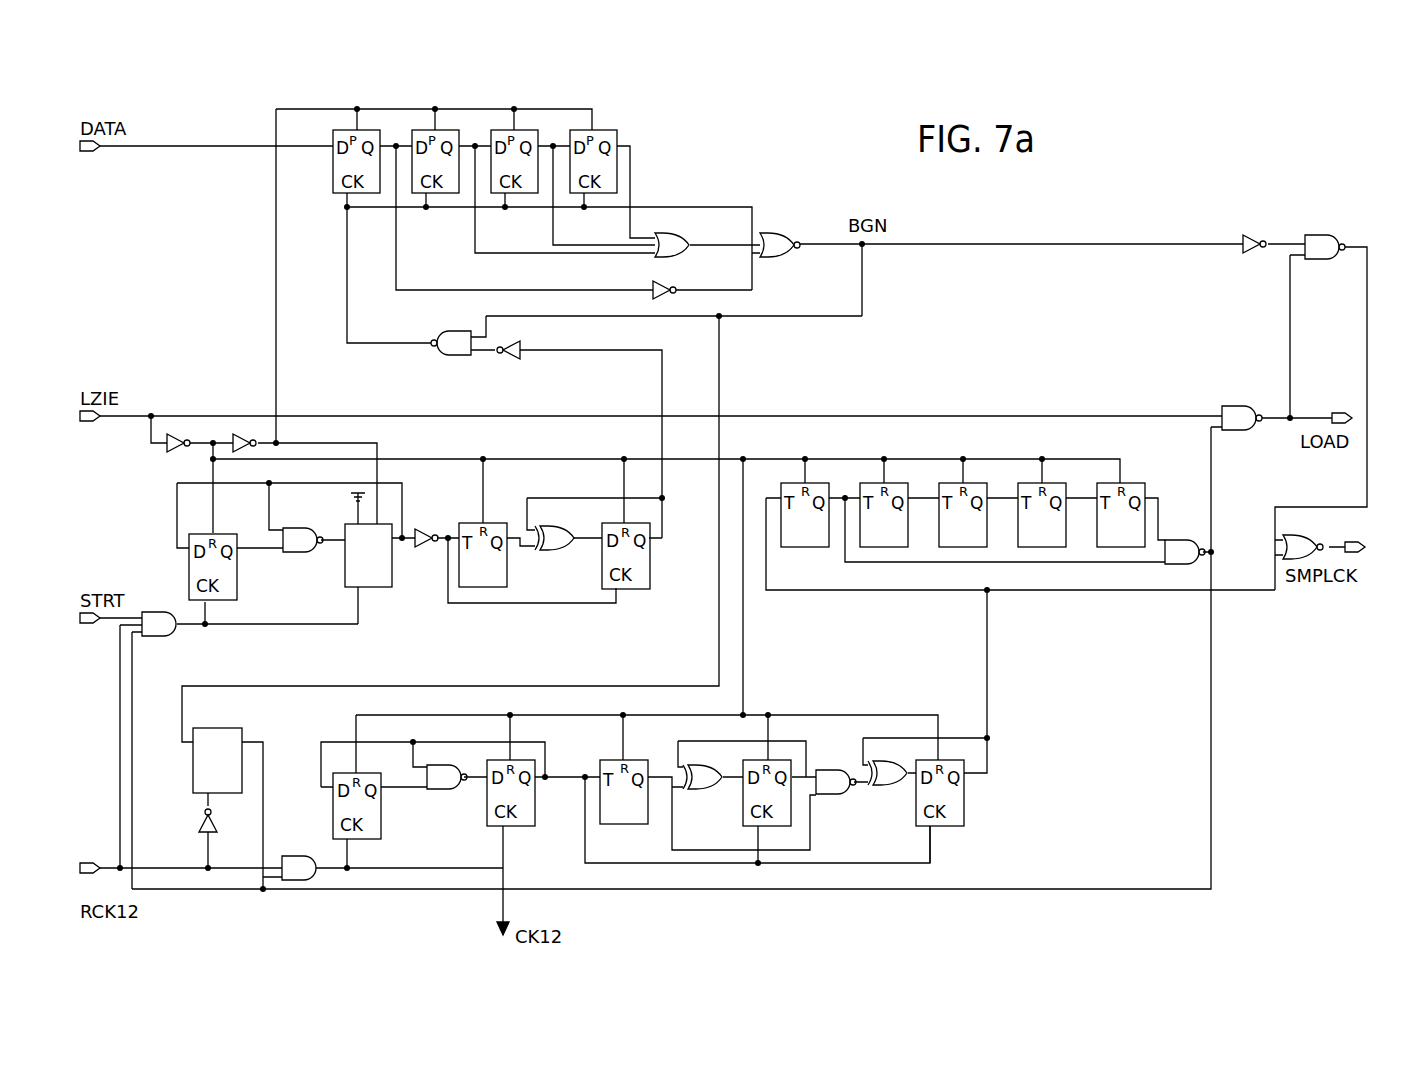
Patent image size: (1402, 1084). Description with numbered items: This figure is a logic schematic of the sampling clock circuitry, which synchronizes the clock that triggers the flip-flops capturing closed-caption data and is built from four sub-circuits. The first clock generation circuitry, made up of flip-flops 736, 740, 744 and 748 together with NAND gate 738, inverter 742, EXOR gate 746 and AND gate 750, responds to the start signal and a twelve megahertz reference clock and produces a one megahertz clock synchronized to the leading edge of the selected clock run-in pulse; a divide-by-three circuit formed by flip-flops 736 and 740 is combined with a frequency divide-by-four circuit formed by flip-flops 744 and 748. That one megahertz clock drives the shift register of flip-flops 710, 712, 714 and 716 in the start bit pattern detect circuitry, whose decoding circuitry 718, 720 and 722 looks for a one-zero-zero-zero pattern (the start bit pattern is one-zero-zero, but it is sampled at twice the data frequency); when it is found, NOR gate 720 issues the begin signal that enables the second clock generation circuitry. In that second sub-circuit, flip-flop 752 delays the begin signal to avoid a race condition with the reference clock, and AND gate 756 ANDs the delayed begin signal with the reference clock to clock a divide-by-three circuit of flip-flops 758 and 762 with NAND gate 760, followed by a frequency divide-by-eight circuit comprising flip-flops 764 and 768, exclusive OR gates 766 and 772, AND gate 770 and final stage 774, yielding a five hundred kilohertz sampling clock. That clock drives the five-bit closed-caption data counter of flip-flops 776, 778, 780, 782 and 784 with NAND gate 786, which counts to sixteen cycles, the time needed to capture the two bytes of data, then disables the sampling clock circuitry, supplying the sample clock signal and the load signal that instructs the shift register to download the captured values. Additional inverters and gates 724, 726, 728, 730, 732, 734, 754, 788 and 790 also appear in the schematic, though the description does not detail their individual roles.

The flip-flop 710 is at (335, 128).
The flip-flop 712 is at (445, 128).
The flip-flop 714 is at (527, 128).
The flip-flop 716 is at (612, 128).
The decoding circuitry 718 is at (672, 233).
The NOR gate 720 is at (772, 233).
The decoding circuitry 722 is at (662, 298).
The NAND gate 724 is at (455, 357).
The inverter 726 is at (510, 360).
The inverter 728 is at (1258, 236).
The NAND gate 730 is at (1312, 236).
The inverter 732 is at (175, 449).
The inverter 734 is at (245, 436).
The flip-flop 736 is at (226, 533).
The NAND gate 738 is at (305, 528).
The flip-flop 740 is at (344, 557).
The inverter 742 is at (425, 533).
The flip-flop 744 is at (497, 523).
The EXOR gate 746 is at (543, 550).
The flip-flop 748 is at (650, 563).
The AND gate 750 is at (178, 636).
The flip-flop 752 is at (222, 728).
The inverter 754 is at (200, 825).
The AND gate 756 is at (295, 855).
The flip-flop 758 is at (382, 838).
The NAND gate 760 is at (437, 790).
The flip-flop 762 is at (520, 828).
The flip-flop 764 is at (610, 827).
The exclusive OR gate 766 is at (705, 790).
The flip-flop 768 is at (748, 758).
The AND gate 770 is at (828, 797).
The exclusive OR gate 772 is at (900, 760).
The frequency divide-by-eight circuit stage 774 is at (965, 800).
The flip-flop 776 is at (790, 483).
The flip-flop 778 is at (870, 483).
The flip-flop 780 is at (950, 483).
The flip-flop 782 is at (1028, 483).
The flip-flop 784 is at (1107, 483).
The NAND gate 786 is at (1190, 540).
The NAND gate 788 is at (1240, 407).
The NOR gate 790 is at (1305, 540).